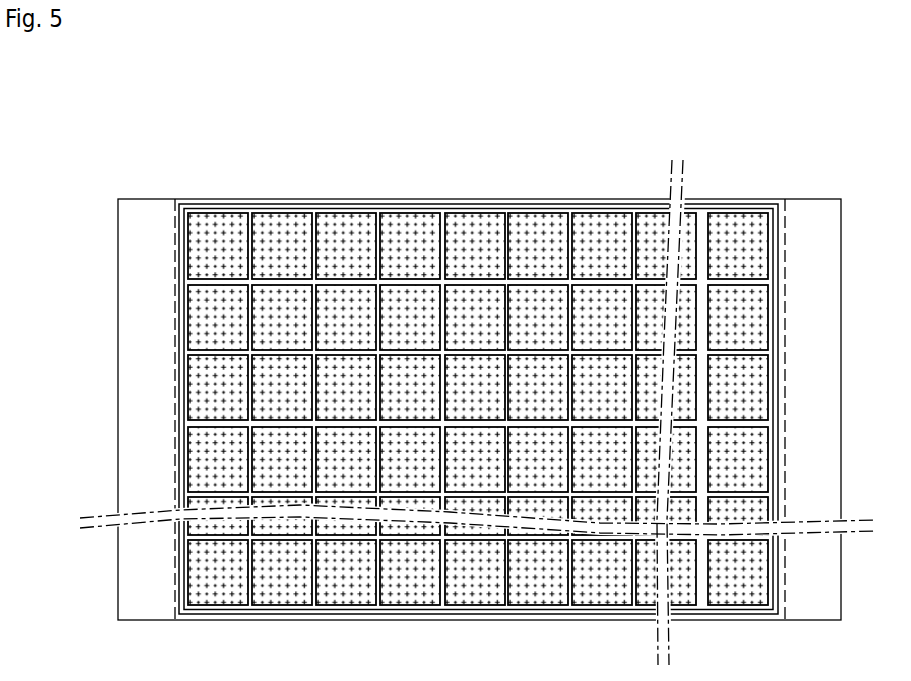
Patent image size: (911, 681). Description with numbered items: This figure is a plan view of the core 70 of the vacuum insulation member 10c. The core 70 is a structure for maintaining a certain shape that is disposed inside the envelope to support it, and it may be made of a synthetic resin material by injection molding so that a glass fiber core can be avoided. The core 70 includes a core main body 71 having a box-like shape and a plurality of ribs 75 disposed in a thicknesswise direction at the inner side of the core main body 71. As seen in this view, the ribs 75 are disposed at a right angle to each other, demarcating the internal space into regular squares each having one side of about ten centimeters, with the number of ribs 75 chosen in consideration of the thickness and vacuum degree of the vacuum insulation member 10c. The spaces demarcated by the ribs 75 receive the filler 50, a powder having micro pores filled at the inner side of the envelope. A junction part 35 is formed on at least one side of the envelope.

The vacuum insulation member 10c is at (174, 158).
The junction part 35 is at (137, 365).
The filler 50 is at (346, 240).
The core 70 is at (546, 100).
The core main body 71 is at (473, 210).
The ribs 75 is at (538, 283).